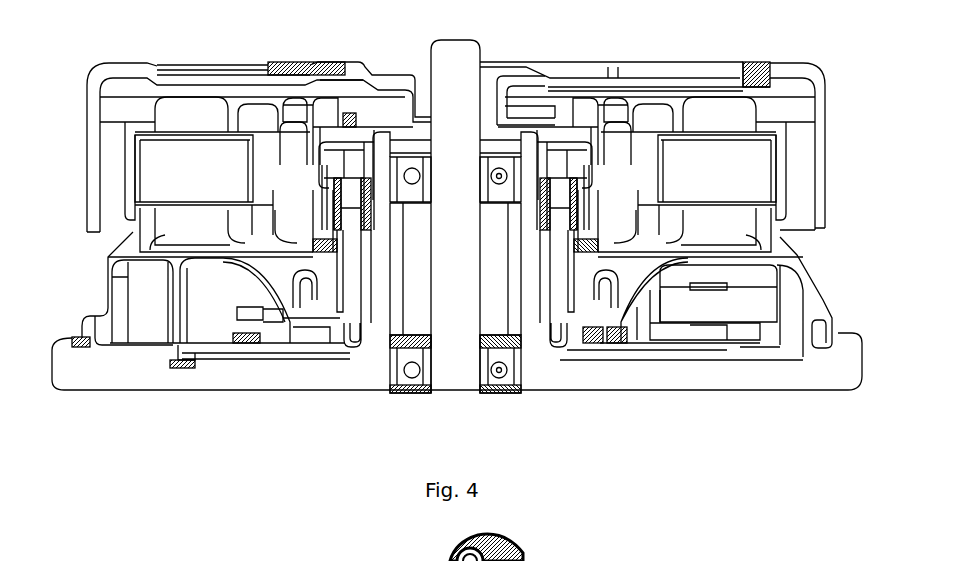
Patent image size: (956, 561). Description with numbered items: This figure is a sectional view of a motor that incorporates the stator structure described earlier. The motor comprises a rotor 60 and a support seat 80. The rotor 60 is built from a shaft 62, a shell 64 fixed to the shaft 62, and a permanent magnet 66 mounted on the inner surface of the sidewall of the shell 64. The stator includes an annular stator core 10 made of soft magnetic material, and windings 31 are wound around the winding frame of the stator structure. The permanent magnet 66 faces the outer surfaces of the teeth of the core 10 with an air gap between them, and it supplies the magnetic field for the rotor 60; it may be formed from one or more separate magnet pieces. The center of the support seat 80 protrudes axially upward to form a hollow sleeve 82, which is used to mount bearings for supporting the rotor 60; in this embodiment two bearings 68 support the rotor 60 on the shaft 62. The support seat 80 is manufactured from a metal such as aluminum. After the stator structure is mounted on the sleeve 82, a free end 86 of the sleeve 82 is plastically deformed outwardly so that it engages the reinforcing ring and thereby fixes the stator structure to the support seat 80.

The stator core 10 is at (203, 178).
The windings 31 is at (222, 228).
The rotor 60 is at (118, 66).
The shaft 62 is at (457, 70).
The shell 64 is at (95, 197).
The permanent magnet 66 is at (112, 147).
The bearings 68 is at (395, 375).
The support seat 80 is at (640, 380).
The hollow sleeve 82 is at (523, 288).
The free end 86 is at (345, 120).